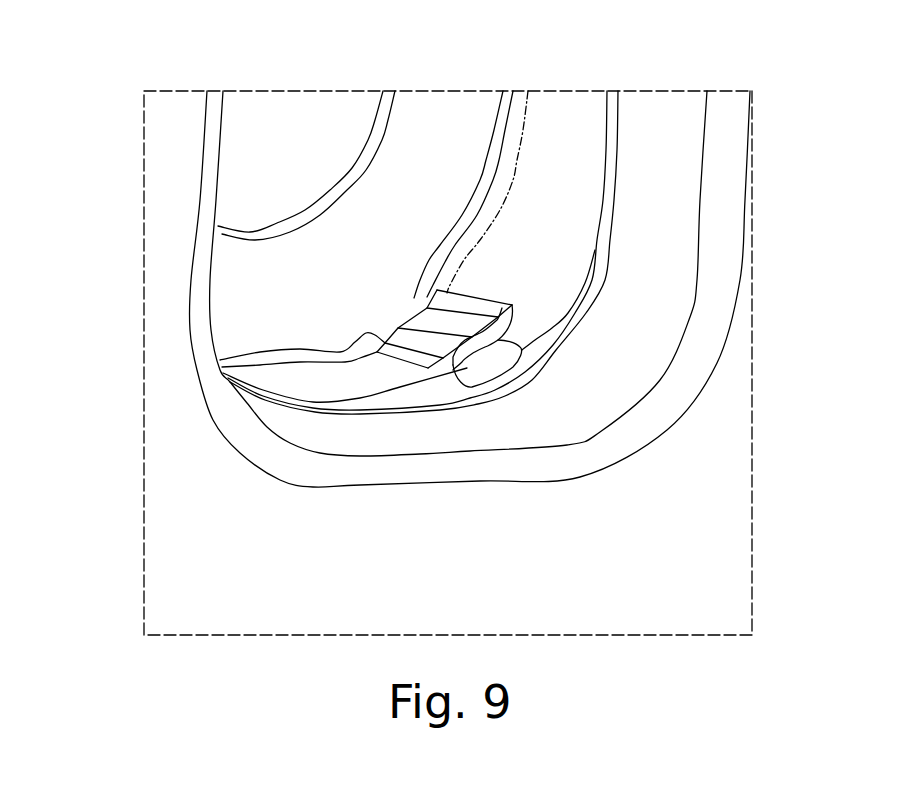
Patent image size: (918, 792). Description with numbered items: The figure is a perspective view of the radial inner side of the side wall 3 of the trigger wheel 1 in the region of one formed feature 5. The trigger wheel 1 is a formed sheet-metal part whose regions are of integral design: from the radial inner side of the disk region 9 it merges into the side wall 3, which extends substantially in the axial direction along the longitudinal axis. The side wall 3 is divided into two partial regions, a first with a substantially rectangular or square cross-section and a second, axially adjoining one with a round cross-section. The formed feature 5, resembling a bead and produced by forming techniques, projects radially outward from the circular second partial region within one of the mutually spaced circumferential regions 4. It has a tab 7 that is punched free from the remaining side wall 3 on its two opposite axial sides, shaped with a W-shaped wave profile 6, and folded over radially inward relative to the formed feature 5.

The trigger wheel 1 is at (435, 366).
The side wall 3 is at (520, 270).
The circumferential regions 4 is at (357, 340).
The formed feature 5 is at (490, 363).
The wave profile 6 is at (643, 360).
The tab 7 is at (443, 332).
The disk region 9 is at (690, 568).